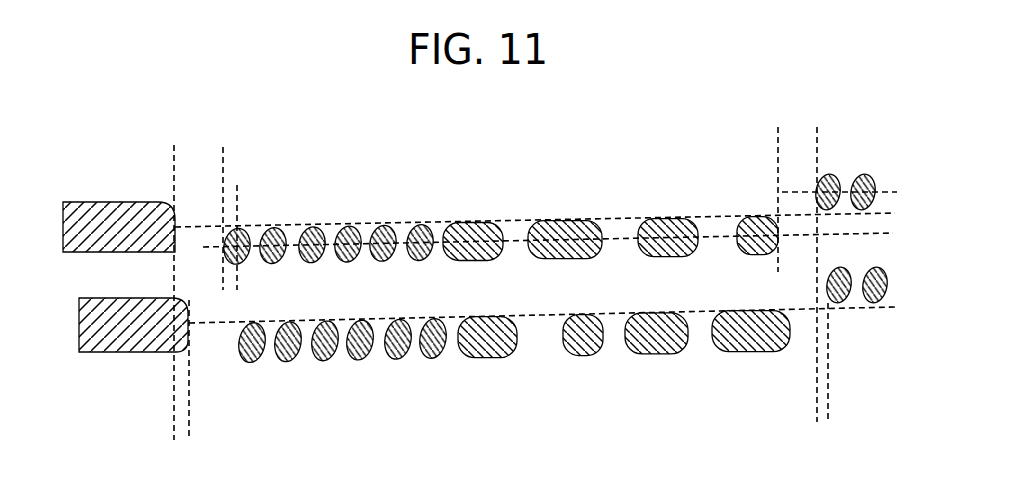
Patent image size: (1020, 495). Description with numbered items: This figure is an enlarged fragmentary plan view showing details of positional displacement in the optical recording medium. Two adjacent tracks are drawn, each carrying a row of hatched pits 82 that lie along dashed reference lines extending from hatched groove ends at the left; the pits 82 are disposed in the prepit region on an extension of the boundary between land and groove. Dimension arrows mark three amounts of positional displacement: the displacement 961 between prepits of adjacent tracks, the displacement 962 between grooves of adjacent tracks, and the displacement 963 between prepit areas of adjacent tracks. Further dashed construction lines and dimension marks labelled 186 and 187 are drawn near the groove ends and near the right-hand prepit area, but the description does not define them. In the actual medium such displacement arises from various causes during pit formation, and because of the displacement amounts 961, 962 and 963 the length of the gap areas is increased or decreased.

The pits 82 is at (465, 225).
The first spacing dimension 186 is at (265, 157).
The second spacing dimension 187 is at (791, 256).
The positional displacement between prepits of adjacent tracks 961 is at (183, 193).
The positional displacement between grooves of adjacent tracks 962 is at (135, 432).
The positional displacement between prepit areas of adjacent tracks 963 is at (775, 393).